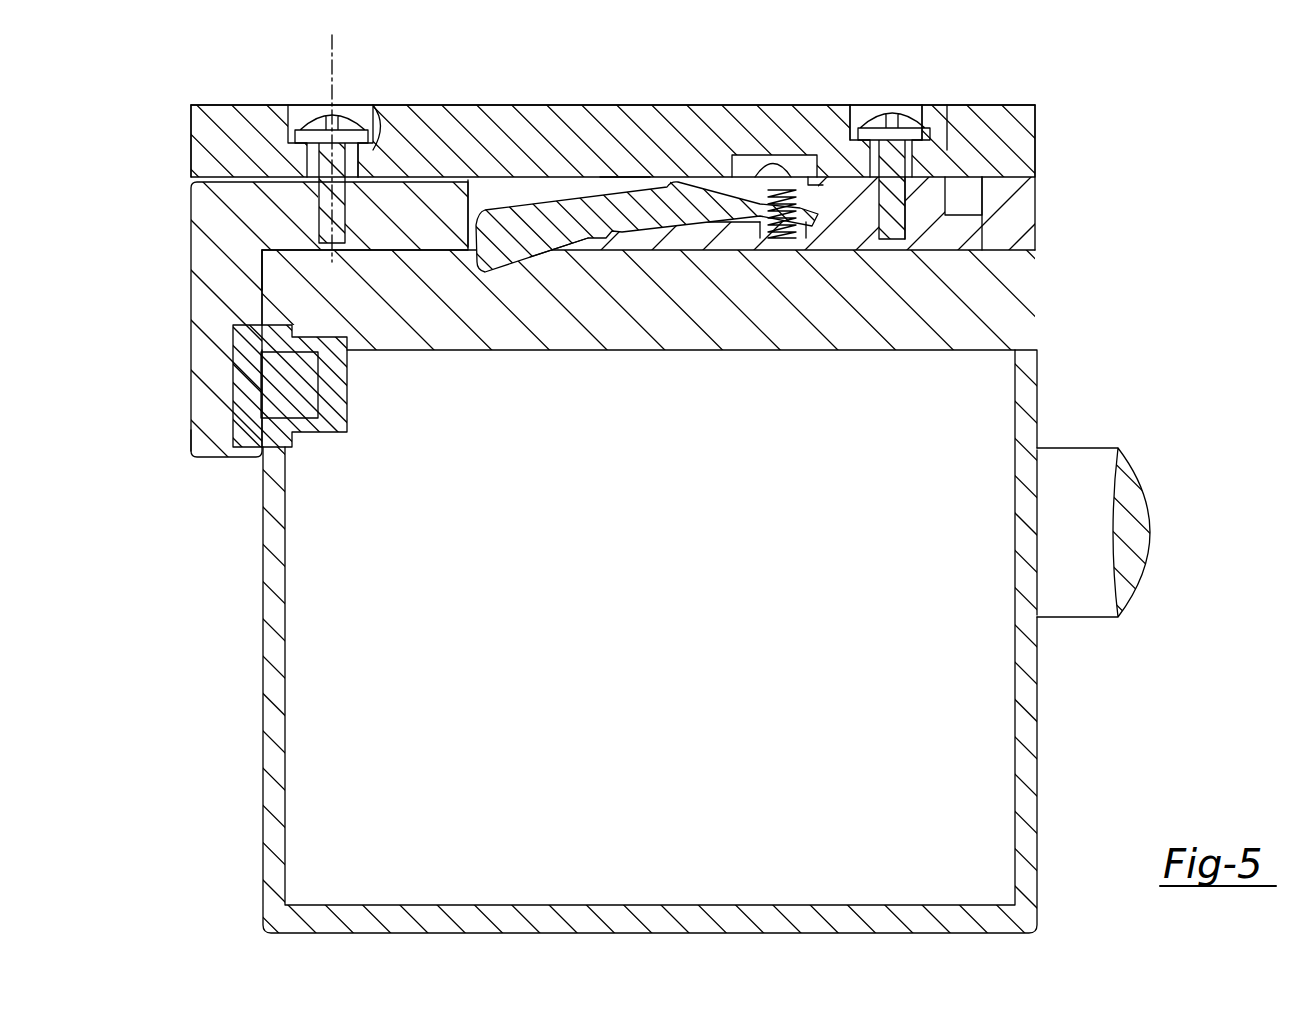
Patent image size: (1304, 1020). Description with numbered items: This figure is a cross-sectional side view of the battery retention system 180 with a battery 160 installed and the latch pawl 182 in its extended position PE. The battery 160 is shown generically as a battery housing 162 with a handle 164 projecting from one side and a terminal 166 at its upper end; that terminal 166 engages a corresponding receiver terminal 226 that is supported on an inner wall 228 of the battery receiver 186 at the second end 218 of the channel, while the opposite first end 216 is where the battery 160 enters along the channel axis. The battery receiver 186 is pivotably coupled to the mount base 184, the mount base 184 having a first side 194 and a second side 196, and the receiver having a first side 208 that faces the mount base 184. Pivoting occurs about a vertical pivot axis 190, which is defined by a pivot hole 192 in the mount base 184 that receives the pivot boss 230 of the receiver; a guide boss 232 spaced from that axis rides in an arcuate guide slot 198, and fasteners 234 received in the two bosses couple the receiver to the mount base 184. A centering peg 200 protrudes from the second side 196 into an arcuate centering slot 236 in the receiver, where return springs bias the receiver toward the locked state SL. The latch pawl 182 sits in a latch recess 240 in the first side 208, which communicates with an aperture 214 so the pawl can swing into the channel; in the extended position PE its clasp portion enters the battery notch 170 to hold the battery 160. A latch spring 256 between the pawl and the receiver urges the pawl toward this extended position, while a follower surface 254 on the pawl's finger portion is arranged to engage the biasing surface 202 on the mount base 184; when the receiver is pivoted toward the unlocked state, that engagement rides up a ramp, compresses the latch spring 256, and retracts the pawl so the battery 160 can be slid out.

The battery 160 is at (1073, 766).
The battery housing 162 is at (1040, 695).
The handle 164 is at (1150, 508).
The terminal 166 is at (345, 450).
The battery notch 170 is at (505, 285).
The battery retention system 180 is at (1194, 100).
The latch pawl 182 is at (564, 258).
The mount base 184 is at (630, 95).
The battery receiver 186 is at (160, 238).
The pivot axis 190 is at (330, 56).
The pivot hole 192 is at (357, 108).
The first side 194 is at (1013, 93).
The second side 196 is at (1005, 230).
The guide slot 198 is at (853, 125).
The centering peg 200 is at (970, 202).
The biasing surface 202 is at (797, 151).
The first side 208 is at (232, 162).
The aperture 214 is at (480, 210).
The first end 216 is at (1052, 265).
The second end 218 is at (270, 267).
The receiver terminal 226 is at (241, 430).
The inner wall 228 is at (215, 432).
The pivot boss 230 is at (372, 145).
The guide boss 232 is at (938, 140).
The fasteners 234 is at (318, 125).
The centering slot 236 is at (960, 248).
The latch recess 240 is at (622, 192).
The follower surface 254 is at (738, 150).
The latch spring 256 is at (822, 238).